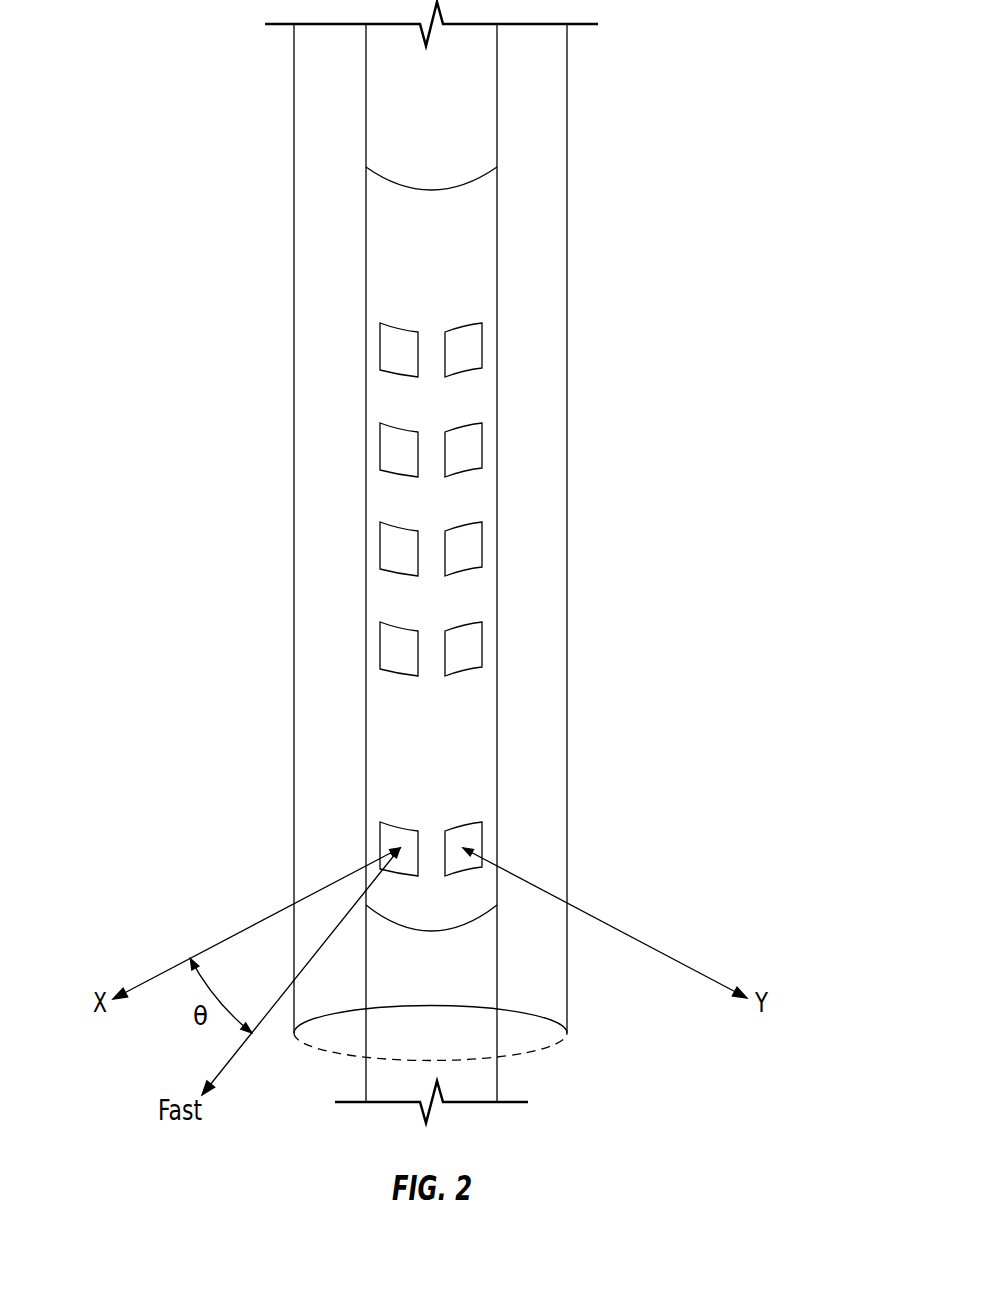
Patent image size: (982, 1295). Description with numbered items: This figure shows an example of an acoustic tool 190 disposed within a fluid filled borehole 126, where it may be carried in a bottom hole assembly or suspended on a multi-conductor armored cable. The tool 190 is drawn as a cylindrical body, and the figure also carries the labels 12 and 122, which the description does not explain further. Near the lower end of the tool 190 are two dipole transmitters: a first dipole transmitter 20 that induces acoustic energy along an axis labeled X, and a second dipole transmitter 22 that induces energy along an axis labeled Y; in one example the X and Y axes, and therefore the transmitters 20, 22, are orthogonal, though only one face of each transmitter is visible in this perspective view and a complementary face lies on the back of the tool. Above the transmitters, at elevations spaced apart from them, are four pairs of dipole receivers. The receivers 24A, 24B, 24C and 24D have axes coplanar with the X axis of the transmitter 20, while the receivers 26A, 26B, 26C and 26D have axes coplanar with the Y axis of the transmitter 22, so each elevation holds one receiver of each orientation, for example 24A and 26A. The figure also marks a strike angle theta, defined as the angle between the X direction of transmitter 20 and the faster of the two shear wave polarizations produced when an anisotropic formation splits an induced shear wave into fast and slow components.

The tubular member 12 is at (567, 333).
The inner tube 122 is at (497, 117).
The borehole 126 is at (541, 155).
The acoustic tool 190 is at (354, 243).
The dipole receiver 24A is at (400, 648).
The dipole receiver 24B is at (400, 548).
The dipole receiver 24C is at (400, 449).
The dipole receiver 24D is at (400, 349).
The dipole receiver 26A is at (463, 648).
The dipole receiver 26B is at (463, 548).
The dipole receiver 26C is at (463, 449).
The dipole receiver 26D is at (463, 349).
The first dipole transmitter 20 is at (400, 848).
The second dipole transmitter 22 is at (463, 848).